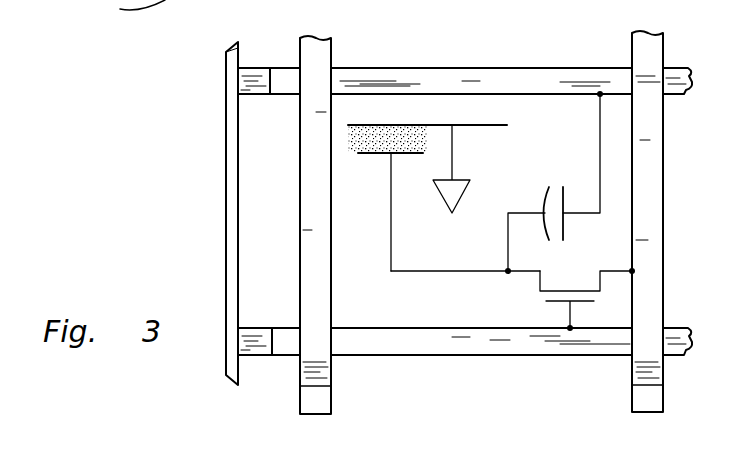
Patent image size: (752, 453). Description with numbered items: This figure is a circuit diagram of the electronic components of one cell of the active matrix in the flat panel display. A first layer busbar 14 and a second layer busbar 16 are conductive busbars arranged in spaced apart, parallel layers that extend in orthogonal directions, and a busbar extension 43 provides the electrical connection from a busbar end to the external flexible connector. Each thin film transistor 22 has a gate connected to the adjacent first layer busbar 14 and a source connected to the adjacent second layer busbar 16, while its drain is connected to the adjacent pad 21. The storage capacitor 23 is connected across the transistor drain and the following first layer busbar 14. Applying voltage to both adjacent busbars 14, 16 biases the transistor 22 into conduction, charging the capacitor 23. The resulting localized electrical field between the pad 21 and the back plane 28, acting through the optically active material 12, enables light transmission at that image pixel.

The optically active material 12 is at (356, 138).
The first layer busbars 14 is at (500, 68).
The second layer busbars 16 is at (665, 188).
The pad 21 is at (376, 155).
The thin film transistor 22 is at (518, 302).
The storage capacitor 23 is at (550, 181).
The back plane 28 is at (391, 125).
The busbar extension 43 is at (253, 328).